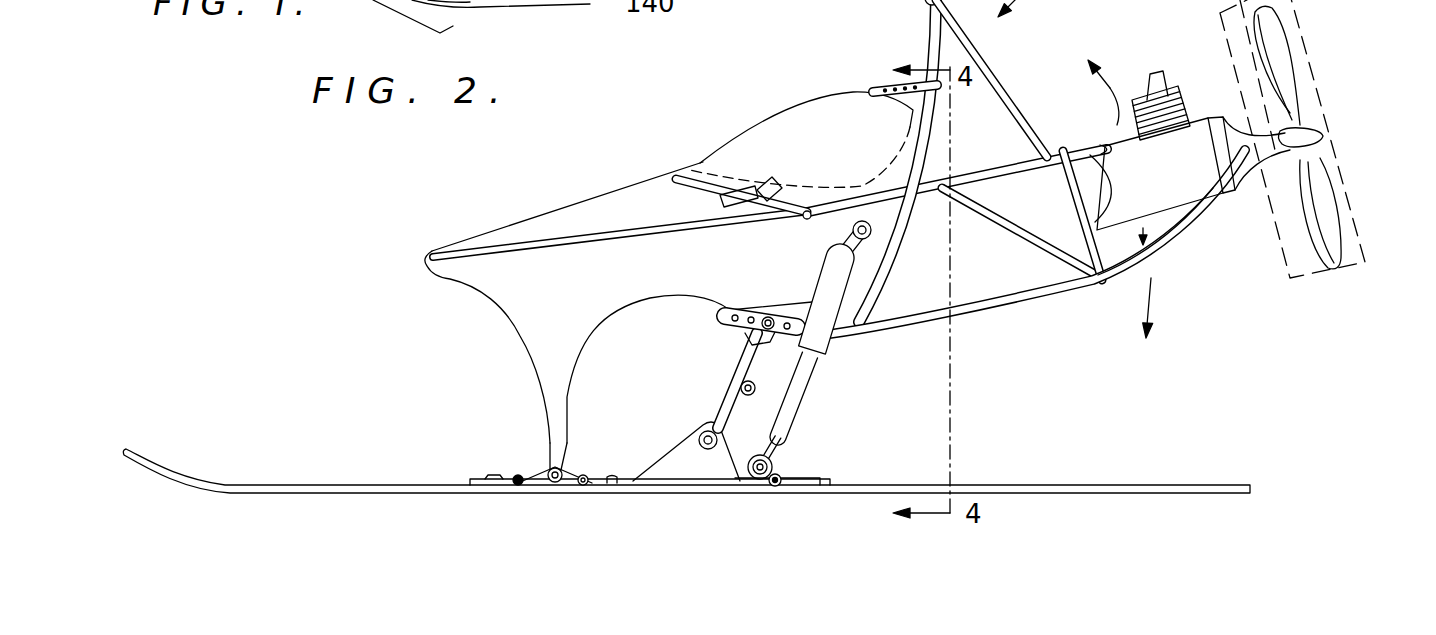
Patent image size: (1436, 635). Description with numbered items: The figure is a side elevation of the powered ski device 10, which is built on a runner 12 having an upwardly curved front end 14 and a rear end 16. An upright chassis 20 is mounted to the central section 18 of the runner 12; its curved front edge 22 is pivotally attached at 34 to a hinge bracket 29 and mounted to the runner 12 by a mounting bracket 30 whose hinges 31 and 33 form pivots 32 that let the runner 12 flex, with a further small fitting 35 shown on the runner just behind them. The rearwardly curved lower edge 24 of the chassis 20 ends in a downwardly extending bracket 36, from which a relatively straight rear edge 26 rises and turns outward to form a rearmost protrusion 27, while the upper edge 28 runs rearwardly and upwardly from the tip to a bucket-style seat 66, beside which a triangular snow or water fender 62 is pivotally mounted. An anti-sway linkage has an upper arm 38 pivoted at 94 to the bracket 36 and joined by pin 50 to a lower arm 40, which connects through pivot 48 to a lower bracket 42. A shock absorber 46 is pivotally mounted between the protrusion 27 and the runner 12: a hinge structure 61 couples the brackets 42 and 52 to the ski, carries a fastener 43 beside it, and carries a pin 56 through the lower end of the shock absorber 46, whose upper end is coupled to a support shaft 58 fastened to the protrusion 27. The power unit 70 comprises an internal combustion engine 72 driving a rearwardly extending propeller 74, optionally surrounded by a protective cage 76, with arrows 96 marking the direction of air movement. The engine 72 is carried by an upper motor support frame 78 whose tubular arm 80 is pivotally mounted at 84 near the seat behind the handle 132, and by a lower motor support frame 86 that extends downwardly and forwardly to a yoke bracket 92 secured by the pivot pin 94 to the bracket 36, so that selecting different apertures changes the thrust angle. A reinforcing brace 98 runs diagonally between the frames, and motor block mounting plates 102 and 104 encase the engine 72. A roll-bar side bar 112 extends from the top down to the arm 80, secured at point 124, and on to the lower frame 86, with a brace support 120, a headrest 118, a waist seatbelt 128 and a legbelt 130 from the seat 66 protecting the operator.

The ski device 10 is at (330, 211).
The runner 12 is at (368, 483).
The front end 14 is at (127, 449).
The rear end 16 is at (1252, 483).
The central section 18 is at (670, 493).
The chassis 20 is at (548, 295).
The front edge 22 is at (553, 422).
The lower edge 24 is at (607, 320).
The rear edge 26 is at (810, 267).
The protrusion 27 is at (893, 245).
The upper edge 28 is at (548, 216).
The hinge bracket 29 is at (547, 470).
The mounting bracket 30 is at (532, 450).
The hinge 31 is at (590, 485).
The pivots 32 is at (528, 488).
The hinge 33 is at (510, 485).
The pivotal attachment 34 is at (562, 473).
The retainer 35 is at (630, 480).
The bracket 36 is at (750, 308).
The upper arm 38 is at (752, 339).
The lower arm 40 is at (742, 403).
The lower bracket 42 is at (657, 457).
The bolt 43 is at (780, 475).
The shock absorber 46 is at (823, 346).
The pivot 48 is at (718, 441).
The pin 50 is at (738, 384).
The bracket 52 is at (800, 433).
The pin 56 is at (765, 481).
The support shaft 58 is at (852, 231).
The hinge structure 61 is at (812, 480).
The fender 62 is at (582, 236).
The seat 66 is at (760, 133).
The power unit 70 is at (1250, 206).
The engine 72 is at (1190, 120).
The propeller 74 is at (1282, 63).
The protective cage 76 is at (1347, 178).
The upper motor support frame 78 is at (1060, 145).
The tubular arm 80 is at (997, 173).
The pivot 84 is at (808, 210).
The lower motor support frame 86 is at (990, 330).
The bracket 92 is at (722, 319).
The pivot pin 94 is at (768, 318).
The air flow arrow 96 is at (1112, 85).
The reinforcing brace 98 is at (1010, 223).
The motor block mounting plate 102 is at (1083, 208).
The motor block mounting plate 104 is at (1168, 221).
The side bar 112 is at (913, 162).
The headrest 118 is at (883, 13).
The brace support 120 is at (995, 75).
The welding point 124 is at (915, 197).
The waist seatbelt 128 is at (875, 88).
The legbelt 130 is at (780, 176).
The handle 132 is at (722, 5).